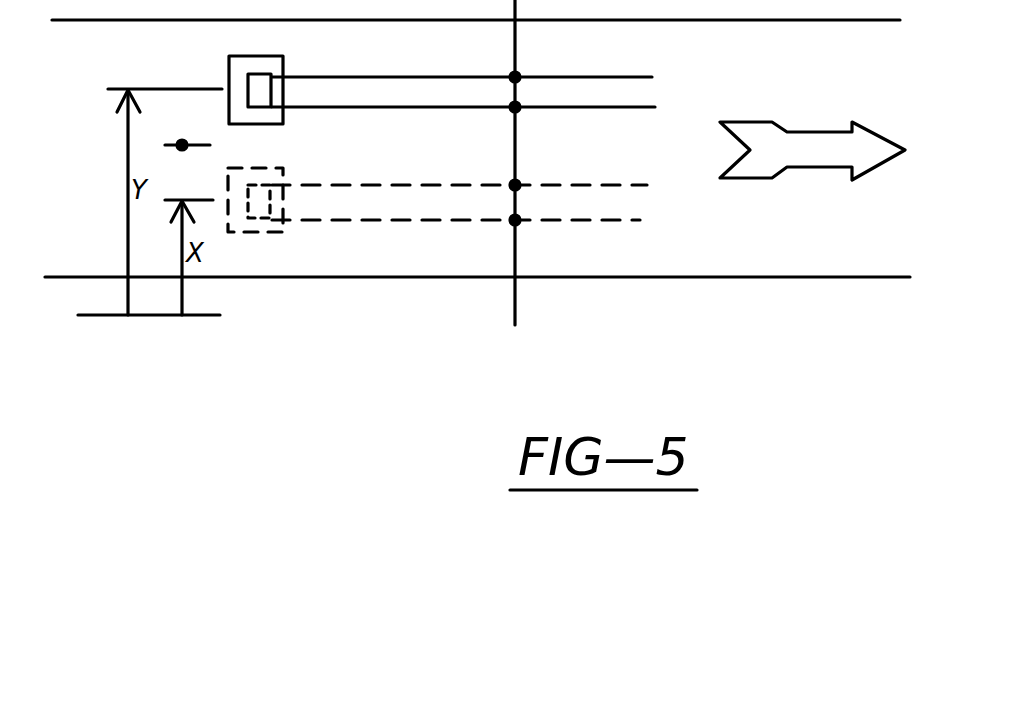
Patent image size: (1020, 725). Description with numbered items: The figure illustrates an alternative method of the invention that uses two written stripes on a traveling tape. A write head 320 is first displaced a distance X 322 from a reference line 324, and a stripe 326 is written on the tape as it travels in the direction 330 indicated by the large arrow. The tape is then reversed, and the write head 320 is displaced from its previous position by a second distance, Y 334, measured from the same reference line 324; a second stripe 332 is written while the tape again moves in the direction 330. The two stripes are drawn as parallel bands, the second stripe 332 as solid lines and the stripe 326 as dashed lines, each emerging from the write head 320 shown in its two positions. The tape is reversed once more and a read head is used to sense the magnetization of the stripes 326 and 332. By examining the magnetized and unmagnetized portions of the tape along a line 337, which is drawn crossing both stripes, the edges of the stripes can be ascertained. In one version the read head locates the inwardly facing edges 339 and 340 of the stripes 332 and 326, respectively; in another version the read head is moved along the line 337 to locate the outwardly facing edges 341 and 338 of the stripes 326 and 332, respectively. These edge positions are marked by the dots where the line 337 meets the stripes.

The write head 320 is at (272, 122).
The distance X 322 is at (183, 288).
The reference line 324 is at (200, 318).
The stripe 326 is at (418, 206).
The direction 330 is at (765, 133).
The second stripe 332 is at (401, 90).
The Y offset dimension 334 is at (182, 145).
The line 337 is at (517, 300).
The outwardly facing edge 338 is at (547, 43).
The inwardly facing edge 339 is at (515, 107).
The inwardly facing edge 340 is at (512, 181).
The outwardly facing edge 341 is at (515, 220).